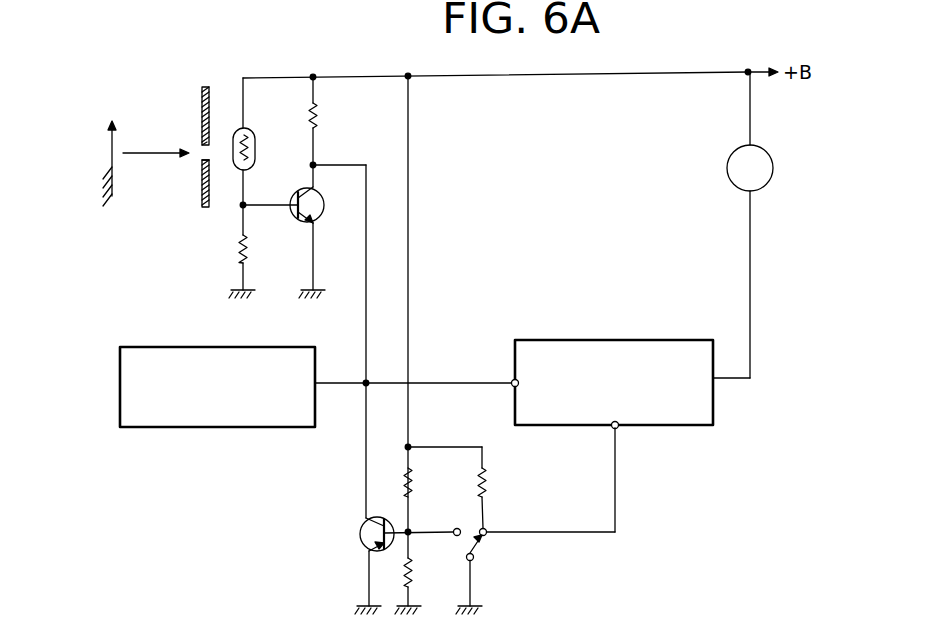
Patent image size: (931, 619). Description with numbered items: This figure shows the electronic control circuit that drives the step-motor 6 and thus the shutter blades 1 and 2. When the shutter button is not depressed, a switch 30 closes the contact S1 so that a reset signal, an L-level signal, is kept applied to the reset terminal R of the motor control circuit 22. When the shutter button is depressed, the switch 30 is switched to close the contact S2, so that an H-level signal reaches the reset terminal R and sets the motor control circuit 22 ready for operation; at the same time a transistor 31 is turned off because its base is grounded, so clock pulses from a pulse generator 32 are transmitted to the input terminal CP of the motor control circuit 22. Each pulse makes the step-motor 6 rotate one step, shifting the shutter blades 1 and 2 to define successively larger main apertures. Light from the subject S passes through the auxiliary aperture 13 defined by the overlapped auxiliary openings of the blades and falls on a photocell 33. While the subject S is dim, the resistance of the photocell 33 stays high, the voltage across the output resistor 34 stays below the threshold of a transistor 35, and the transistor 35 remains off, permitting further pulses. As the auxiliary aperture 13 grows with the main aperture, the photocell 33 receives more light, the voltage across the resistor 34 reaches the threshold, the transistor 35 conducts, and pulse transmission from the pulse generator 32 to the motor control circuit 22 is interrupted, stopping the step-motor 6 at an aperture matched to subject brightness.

The shutter blade 1 is at (200, 93).
The shutter blade 2 is at (202, 202).
The auxiliary aperture 13 is at (201, 158).
The subject S is at (118, 130).
The photocell 33 is at (245, 130).
The output resistor 34 is at (238, 250).
The transistor 35 is at (297, 222).
The step-motor 6 is at (729, 184).
The motor control circuit 22 is at (617, 340).
The pulse generator 32 is at (212, 428).
The transistor 31 is at (358, 530).
The switch 30 is at (489, 561).
The contact S1 is at (486, 543).
The contact S2 is at (450, 522).
The input terminal CP is at (513, 379).
The reset terminal R is at (618, 428).